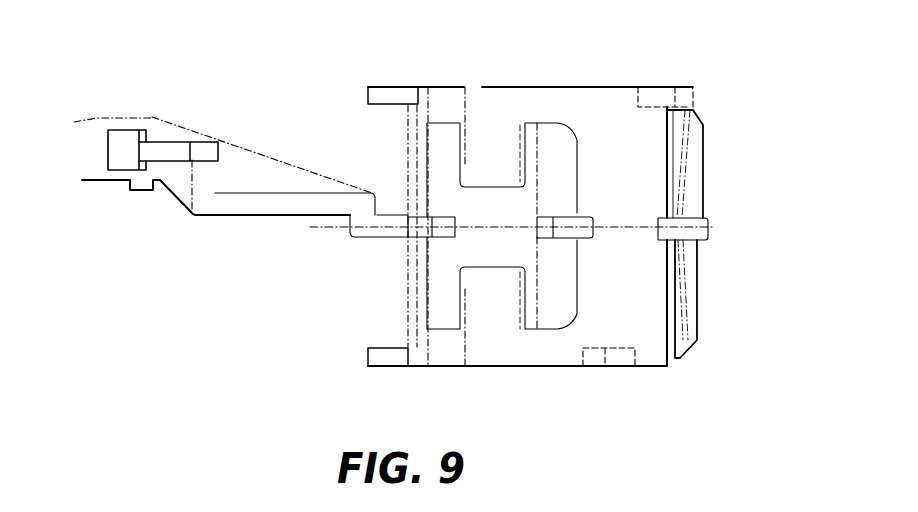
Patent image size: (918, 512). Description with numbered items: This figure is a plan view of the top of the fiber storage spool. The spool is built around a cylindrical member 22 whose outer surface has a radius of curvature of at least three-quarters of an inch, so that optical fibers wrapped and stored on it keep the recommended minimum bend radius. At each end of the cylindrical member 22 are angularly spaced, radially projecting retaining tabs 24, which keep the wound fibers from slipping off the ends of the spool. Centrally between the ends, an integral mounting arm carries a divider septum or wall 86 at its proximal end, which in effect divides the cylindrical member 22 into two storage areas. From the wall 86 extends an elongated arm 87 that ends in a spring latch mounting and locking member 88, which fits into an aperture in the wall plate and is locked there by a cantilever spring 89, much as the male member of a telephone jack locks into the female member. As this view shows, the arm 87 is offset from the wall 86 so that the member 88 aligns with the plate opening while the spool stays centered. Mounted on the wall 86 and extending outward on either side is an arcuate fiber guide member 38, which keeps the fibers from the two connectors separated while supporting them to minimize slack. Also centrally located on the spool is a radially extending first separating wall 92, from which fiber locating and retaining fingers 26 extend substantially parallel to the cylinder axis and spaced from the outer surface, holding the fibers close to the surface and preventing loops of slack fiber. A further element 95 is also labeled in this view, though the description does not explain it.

The latch frame body 22 is at (495, 87).
The mounting tabs 24 is at (368, 97).
The lever arms 26 is at (705, 143).
The H-shaped slot arms 38 is at (555, 140).
The pivot shaft with clamps 86 is at (582, 217).
The actuating lever 87 is at (254, 208).
The end block 88 is at (74, 146).
The protruding pin 89 is at (175, 140).
The end clamp 92 is at (710, 226).
The bottom plate 95 is at (536, 375).